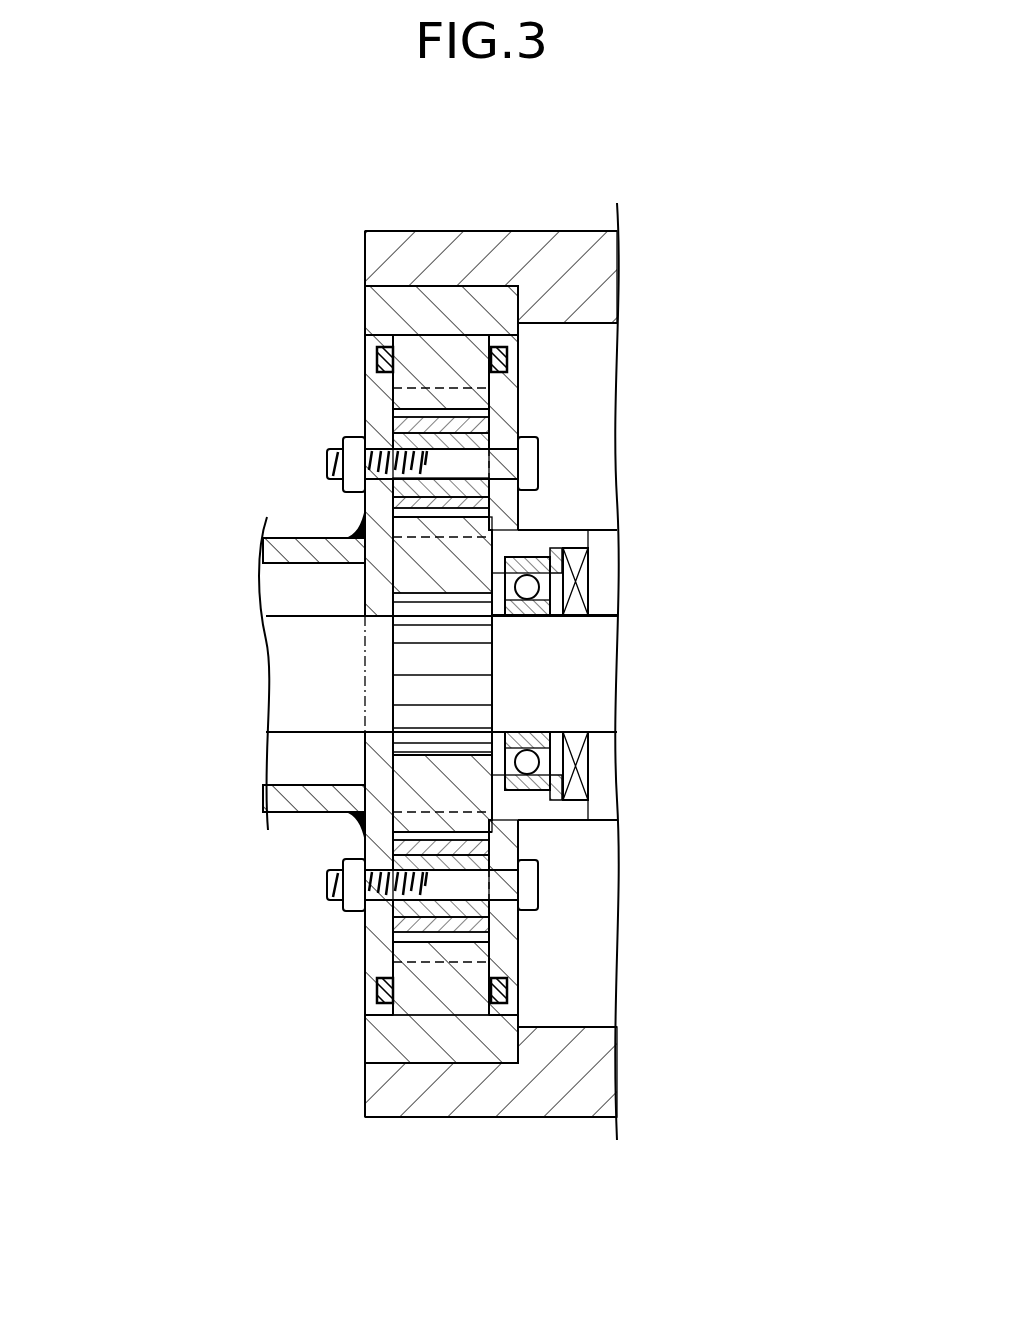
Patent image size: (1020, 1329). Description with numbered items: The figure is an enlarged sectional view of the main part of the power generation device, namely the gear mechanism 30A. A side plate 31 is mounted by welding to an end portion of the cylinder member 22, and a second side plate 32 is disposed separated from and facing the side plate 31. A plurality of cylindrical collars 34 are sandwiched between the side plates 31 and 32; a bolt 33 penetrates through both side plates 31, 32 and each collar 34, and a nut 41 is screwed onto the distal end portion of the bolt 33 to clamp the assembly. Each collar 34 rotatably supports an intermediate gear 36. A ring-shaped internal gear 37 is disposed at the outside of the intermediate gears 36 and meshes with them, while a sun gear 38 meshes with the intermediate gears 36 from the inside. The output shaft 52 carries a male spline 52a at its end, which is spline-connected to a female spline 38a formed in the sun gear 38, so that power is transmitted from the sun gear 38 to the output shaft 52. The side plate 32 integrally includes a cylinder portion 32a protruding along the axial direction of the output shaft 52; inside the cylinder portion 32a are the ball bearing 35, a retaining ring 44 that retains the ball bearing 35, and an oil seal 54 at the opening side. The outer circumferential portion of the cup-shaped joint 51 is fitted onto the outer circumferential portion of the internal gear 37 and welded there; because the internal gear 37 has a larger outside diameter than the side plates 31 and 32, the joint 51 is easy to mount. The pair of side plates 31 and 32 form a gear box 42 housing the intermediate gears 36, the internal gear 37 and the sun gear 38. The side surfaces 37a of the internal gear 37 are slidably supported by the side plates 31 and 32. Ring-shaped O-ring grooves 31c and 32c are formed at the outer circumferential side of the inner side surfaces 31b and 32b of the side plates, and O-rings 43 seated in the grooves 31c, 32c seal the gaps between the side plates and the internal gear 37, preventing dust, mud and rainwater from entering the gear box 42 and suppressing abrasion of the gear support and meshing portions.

The gear mechanism 30A is at (264, 312).
The cup-shaped joint 51 is at (521, 238).
The internal gear 37 is at (433, 300).
The side plate 31 is at (355, 403).
The side plate 32 is at (540, 384).
The bolt 33 is at (538, 463).
The collar 34 is at (478, 442).
The intermediate gear 36 is at (483, 505).
The nut 41 is at (353, 438).
The cylinder member 22 is at (293, 545).
The output shaft 52 is at (278, 683).
The male spline 52a is at (430, 778).
The ball bearing 35 is at (540, 615).
The sun gear 38 is at (440, 575).
The female spline 38a is at (442, 755).
The retaining ring 44 is at (570, 530).
The oil seal 54 is at (585, 770).
The cylinder portion 32a is at (565, 548).
The side surface 37a is at (390, 950).
The O-ring groove 31c is at (373, 987).
The O-ring groove 32c is at (513, 1012).
The inner side surface 31b is at (398, 1014).
The inner side surface 32b is at (493, 1013).
The O-ring 43 is at (487, 1003).
The gear box 42 is at (345, 1012).